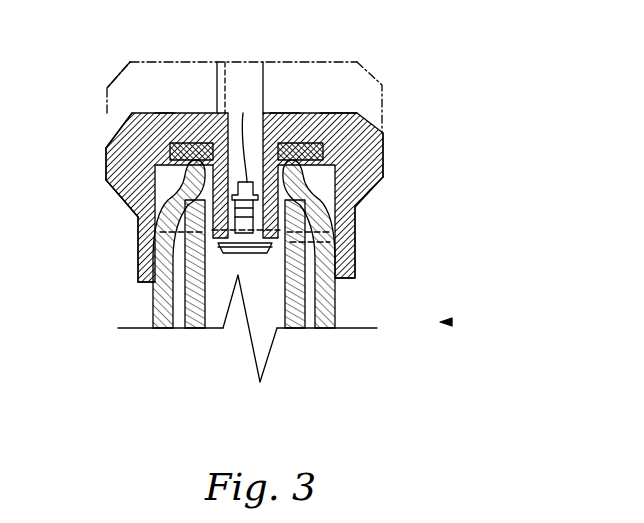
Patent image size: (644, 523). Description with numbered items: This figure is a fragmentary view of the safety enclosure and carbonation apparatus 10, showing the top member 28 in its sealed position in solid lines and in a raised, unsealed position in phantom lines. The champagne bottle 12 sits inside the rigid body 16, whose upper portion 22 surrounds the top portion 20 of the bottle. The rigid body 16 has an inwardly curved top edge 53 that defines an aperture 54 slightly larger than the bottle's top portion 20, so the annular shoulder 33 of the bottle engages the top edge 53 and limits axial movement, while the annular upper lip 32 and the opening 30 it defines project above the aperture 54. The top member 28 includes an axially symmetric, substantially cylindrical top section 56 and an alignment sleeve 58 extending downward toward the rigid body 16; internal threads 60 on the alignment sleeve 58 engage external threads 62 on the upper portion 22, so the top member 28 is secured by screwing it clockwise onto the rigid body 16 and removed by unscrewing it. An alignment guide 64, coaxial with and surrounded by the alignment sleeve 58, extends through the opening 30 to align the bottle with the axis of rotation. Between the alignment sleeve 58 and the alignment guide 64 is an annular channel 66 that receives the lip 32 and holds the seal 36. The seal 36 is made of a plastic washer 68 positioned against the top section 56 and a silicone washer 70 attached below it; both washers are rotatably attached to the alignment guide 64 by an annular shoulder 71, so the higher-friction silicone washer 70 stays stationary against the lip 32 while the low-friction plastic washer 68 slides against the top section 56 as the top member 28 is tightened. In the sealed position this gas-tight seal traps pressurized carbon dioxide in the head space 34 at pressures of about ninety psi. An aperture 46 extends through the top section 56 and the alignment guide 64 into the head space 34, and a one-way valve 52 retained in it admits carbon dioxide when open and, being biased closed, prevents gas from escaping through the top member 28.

The safety enclosure and carbonation apparatus 10 is at (450, 322).
The champagne bottle 12 is at (185, 315).
The rigid body 16 is at (340, 328).
The top portion 20 is at (335, 245).
The upper portion 22 is at (328, 278).
The top member 28 is at (382, 100).
The opening 30 is at (300, 328).
The annular upper lip 32 is at (107, 143).
The annular shoulder 33 is at (138, 219).
The head space 34 is at (278, 313).
The seal 36 is at (133, 113).
The aperture 46 is at (252, 112).
The one-way valve 52 is at (240, 162).
The top edge 53 is at (112, 164).
The aperture 54 is at (360, 208).
The top section 56 is at (130, 63).
The alignment sleeve 58 is at (144, 262).
The internal threads 60 is at (147, 240).
The external threads 62 is at (176, 323).
The alignment guide 64 is at (370, 168).
The annular channel 66 is at (383, 137).
The plastic washer 68 is at (283, 112).
The silicone washer 70 is at (330, 112).
The annular shoulder 71 is at (163, 112).